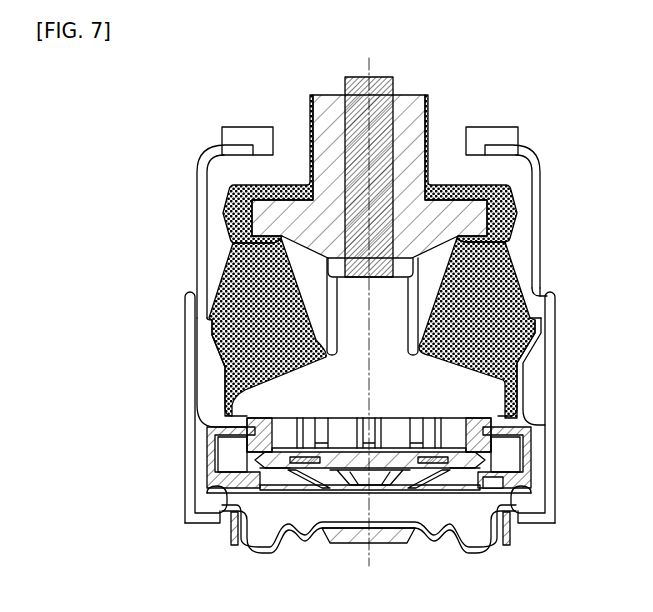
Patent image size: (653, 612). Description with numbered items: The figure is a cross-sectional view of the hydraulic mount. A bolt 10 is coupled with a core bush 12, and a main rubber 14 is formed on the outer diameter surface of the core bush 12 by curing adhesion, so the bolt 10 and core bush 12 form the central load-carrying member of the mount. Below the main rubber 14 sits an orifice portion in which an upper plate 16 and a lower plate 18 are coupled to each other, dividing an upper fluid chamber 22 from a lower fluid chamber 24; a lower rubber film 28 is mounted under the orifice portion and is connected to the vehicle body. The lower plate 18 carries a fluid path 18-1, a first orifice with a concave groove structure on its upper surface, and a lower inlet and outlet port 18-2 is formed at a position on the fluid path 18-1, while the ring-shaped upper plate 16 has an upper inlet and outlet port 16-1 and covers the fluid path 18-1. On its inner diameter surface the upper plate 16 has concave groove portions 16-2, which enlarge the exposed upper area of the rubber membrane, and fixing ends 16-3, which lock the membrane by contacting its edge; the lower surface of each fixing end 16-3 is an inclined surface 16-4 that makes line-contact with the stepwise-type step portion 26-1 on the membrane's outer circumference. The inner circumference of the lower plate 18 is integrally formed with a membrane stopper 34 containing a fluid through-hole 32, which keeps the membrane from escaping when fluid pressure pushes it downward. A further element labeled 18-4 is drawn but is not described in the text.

The bolt 10 is at (358, 103).
The core bush 12 is at (412, 103).
The main rubber 14 is at (493, 305).
The upper plate 16 is at (498, 422).
The upper inlet and outlet port 16-1 is at (240, 427).
The concave groove portion 16-2 is at (313, 418).
The fixing end 16-3 is at (298, 418).
The inclined surface 16-4 is at (418, 420).
The lower plate 18 is at (528, 471).
The fluid path 18-1 is at (232, 459).
The lower inlet and outlet port 18-2 is at (492, 491).
The support member 18-4 is at (282, 489).
The upper fluid chamber 22 is at (262, 388).
The lower fluid chamber 24 is at (310, 510).
The stepwise-type step portion 26-1 is at (255, 495).
The lower rubber film 28 is at (354, 495).
The fluid through-hole 32 is at (385, 492).
The membrane stopper 34 is at (428, 491).